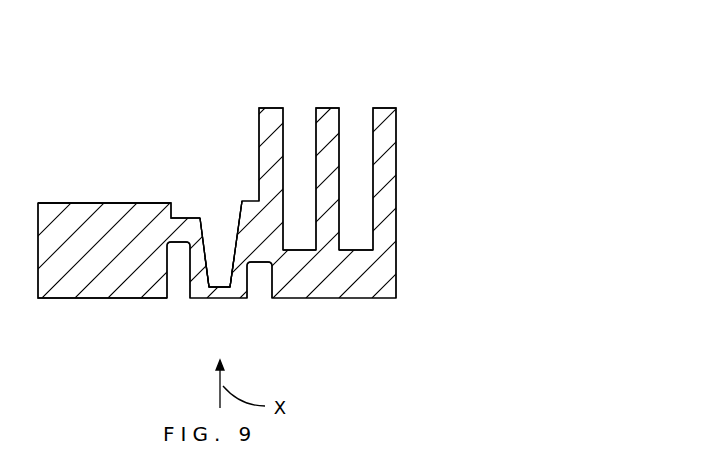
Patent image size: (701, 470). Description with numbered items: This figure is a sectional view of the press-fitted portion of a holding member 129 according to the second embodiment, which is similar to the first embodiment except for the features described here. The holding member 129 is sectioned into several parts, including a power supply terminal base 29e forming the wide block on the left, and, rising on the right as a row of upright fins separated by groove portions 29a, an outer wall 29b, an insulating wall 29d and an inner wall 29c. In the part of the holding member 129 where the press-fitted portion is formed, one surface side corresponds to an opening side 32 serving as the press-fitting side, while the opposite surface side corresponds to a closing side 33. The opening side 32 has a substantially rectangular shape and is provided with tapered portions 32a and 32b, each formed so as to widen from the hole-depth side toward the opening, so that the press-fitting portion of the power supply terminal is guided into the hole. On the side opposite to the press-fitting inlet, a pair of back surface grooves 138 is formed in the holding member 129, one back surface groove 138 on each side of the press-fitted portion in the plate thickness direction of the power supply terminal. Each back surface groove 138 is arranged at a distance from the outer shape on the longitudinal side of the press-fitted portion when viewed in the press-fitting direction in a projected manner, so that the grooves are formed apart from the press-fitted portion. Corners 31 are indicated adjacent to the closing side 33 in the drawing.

The power supply terminal base 29e is at (75, 215).
The holding member 129 is at (147, 202).
The opening side 32 is at (155, 137).
The tapered portion 32a is at (204, 242).
The tapered portion 32b is at (236, 242).
The closing side 33 is at (220, 289).
The groove bottom corner 31 is at (210, 290).
The groove portion 29a is at (294, 130).
The outer wall 29b is at (262, 112).
The inner wall 29c is at (378, 112).
The insulating wall 29d is at (330, 108).
The back surface groove 138 is at (172, 297).